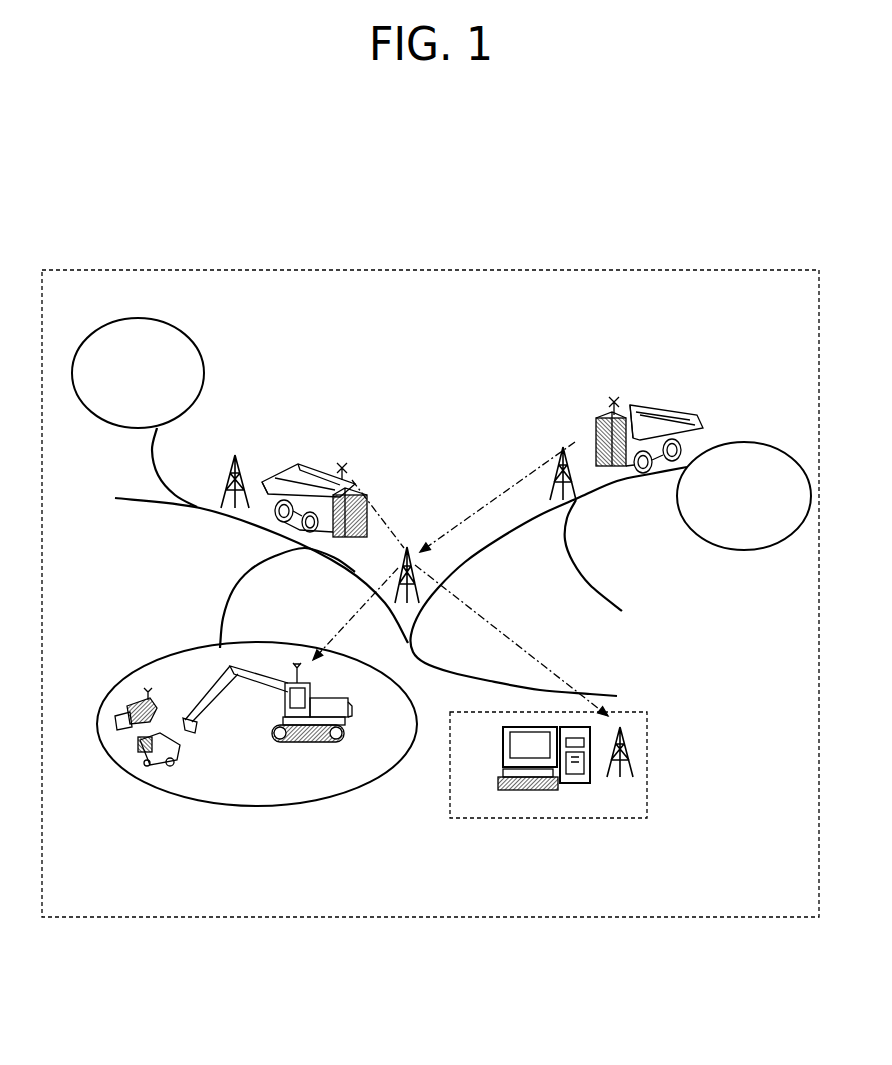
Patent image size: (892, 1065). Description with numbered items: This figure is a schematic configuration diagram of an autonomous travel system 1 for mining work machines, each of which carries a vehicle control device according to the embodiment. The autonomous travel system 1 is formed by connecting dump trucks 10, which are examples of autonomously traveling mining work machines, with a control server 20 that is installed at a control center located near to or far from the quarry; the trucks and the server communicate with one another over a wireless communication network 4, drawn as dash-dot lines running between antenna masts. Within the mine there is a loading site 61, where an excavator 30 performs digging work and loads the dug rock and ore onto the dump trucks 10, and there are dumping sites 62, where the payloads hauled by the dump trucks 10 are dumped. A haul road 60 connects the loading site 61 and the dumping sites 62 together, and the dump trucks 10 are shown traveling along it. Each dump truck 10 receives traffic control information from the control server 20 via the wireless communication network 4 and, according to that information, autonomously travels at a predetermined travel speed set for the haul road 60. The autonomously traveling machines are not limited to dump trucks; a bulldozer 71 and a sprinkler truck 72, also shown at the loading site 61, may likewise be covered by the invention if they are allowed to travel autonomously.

The autonomous travel system 1 is at (755, 269).
The wireless communication network 4 is at (573, 683).
The dump truck 10 is at (294, 462).
The control server 20 is at (575, 787).
The excavator 30 is at (277, 743).
The haul road 60 is at (573, 562).
The loading site 61 is at (273, 810).
The dumping site 62 is at (147, 321).
The bulldozer 71 is at (122, 702).
The sprinkler truck 72 is at (137, 763).